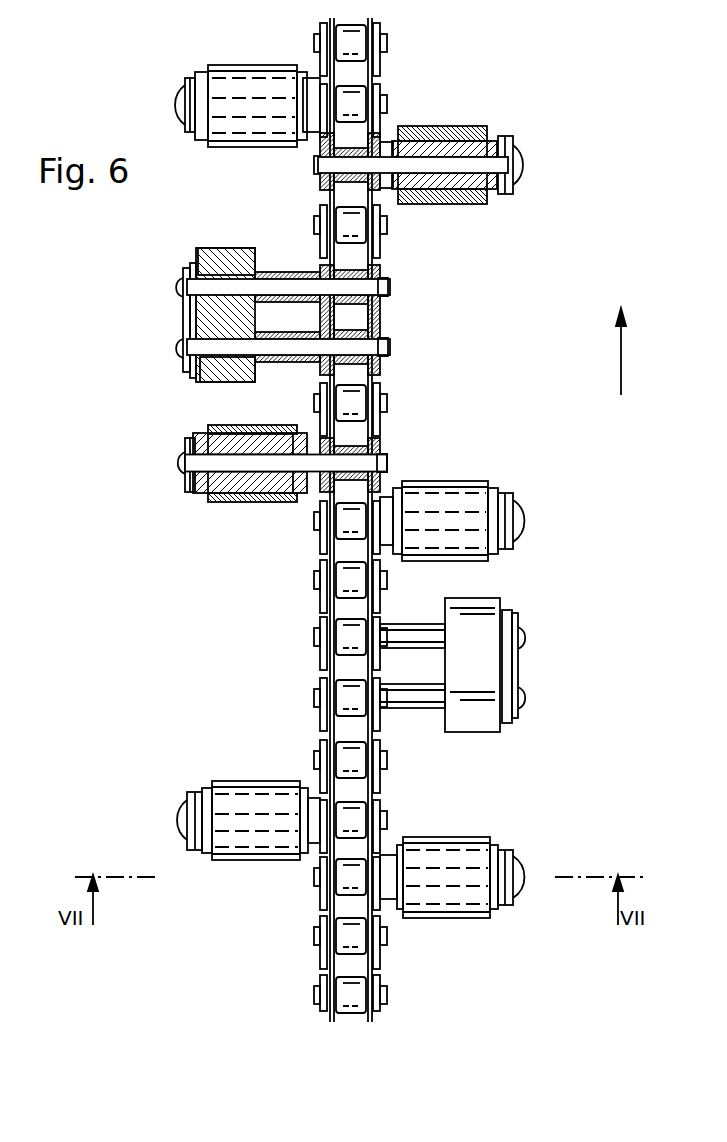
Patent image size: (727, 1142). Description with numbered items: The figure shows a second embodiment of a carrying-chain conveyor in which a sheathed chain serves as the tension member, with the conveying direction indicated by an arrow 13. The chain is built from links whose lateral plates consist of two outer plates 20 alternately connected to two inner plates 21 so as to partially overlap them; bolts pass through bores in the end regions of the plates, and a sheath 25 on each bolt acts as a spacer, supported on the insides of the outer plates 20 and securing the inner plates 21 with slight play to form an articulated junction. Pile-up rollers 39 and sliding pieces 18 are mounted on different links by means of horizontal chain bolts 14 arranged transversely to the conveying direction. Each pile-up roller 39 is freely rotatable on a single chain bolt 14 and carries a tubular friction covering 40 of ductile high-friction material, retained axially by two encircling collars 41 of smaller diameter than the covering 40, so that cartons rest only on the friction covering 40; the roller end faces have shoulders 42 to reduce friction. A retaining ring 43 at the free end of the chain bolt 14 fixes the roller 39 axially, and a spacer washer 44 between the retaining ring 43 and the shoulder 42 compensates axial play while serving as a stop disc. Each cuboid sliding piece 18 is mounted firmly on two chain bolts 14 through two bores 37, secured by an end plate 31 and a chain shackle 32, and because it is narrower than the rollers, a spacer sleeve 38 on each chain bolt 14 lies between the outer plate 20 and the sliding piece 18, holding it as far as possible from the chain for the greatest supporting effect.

The conveying direction arrow 13 is at (617, 354).
The chain bolt 14 is at (467, 160).
The sliding piece 18 is at (197, 258).
The outer plate 20 is at (322, 957).
The inner plate 21 is at (330, 1010).
The sheath 25 is at (350, 995).
The end plate 31 is at (191, 265).
The chain shackle 32 is at (184, 318).
The bore 37 is at (220, 250).
The spacer sleeve 38 is at (273, 272).
The pile-up roller 39 is at (454, 190).
The friction covering 40 is at (259, 66).
The collar 41 is at (397, 206).
The shoulder 42 is at (310, 76).
The retaining ring 43 is at (184, 82).
The spacer washer 44 is at (192, 80).